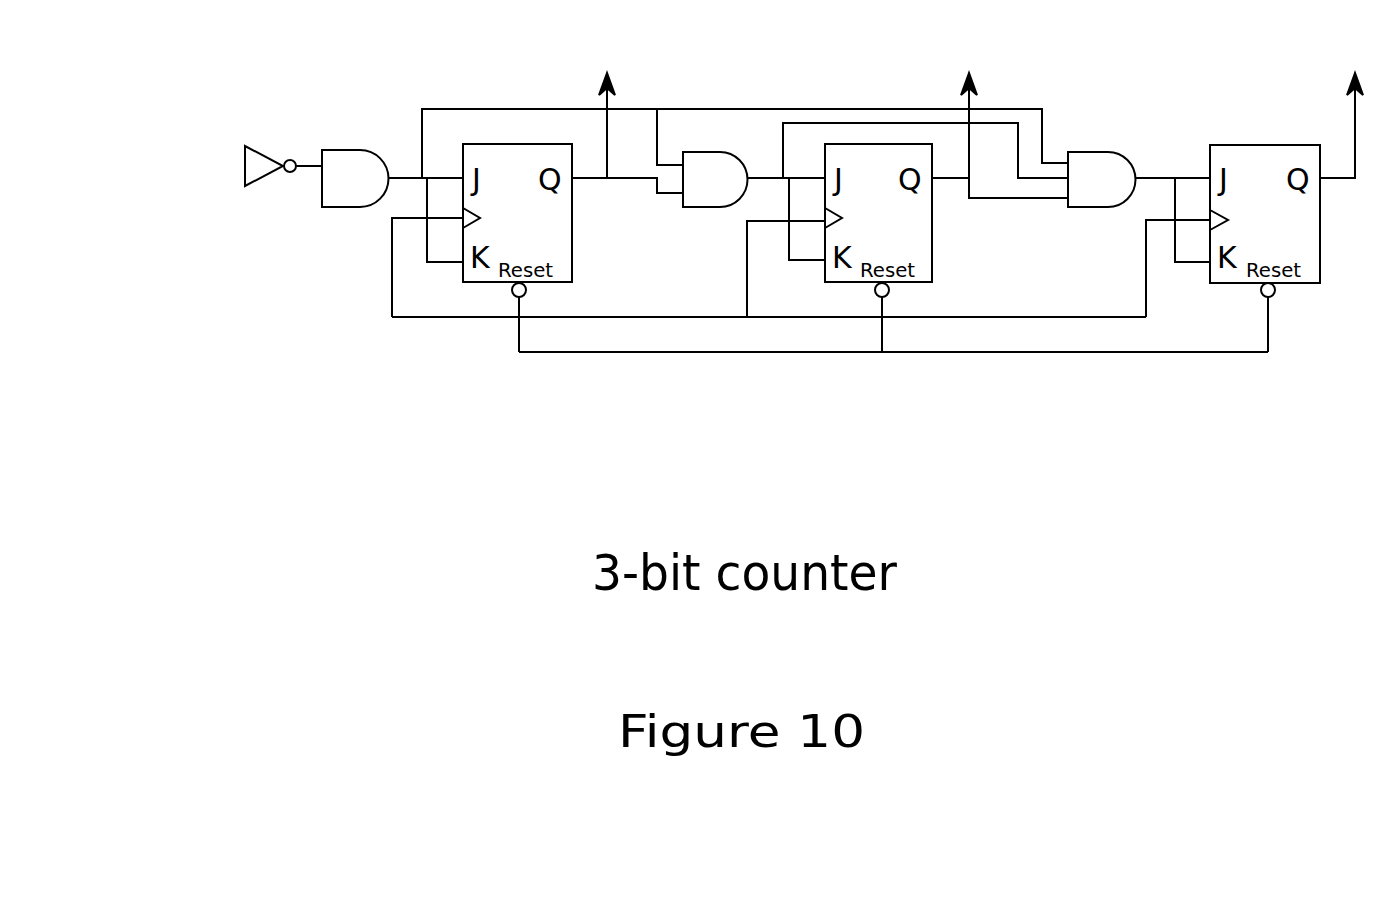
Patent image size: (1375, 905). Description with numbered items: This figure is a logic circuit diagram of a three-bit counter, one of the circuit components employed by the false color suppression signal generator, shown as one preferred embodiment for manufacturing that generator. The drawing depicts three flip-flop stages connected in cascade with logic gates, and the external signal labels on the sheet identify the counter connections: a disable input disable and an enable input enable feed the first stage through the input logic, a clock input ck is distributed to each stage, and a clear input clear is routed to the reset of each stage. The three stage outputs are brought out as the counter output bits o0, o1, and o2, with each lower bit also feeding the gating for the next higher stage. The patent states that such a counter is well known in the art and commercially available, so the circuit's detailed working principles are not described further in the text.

The counter output bit 0 o0 is at (608, 105).
The counter output bit 1 o1 is at (1009, 116).
The counter output bit 2 o2 is at (1346, 106).
The clock input ck is at (392, 317).
The clear input clear is at (519, 352).
The disable input disable is at (245, 166).
The enable input enable is at (322, 194).